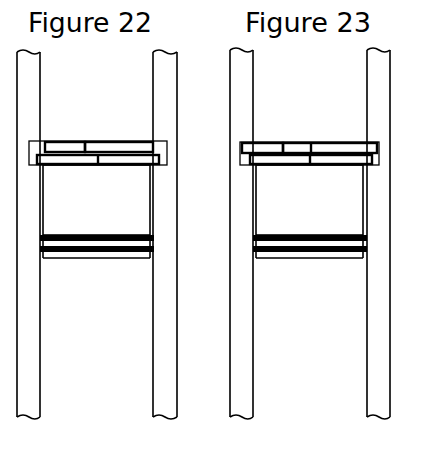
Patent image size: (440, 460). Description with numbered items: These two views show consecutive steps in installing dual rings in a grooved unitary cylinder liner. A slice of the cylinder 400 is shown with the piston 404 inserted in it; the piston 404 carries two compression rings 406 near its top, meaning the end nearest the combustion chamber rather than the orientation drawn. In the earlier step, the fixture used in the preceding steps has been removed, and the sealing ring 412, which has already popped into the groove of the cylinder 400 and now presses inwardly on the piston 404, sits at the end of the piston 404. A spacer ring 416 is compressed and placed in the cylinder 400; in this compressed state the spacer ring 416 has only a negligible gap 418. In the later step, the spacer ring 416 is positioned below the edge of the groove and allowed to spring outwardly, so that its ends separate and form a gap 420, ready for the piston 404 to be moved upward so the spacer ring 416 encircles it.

In FIG. 22, the cylinder 400 is at (160, 325).
In FIG. 23, the cylinder 400 is at (372, 325).
In FIG. 22, the piston 404 is at (118, 212).
In FIG. 23, the piston 404 is at (330, 209).
In FIG. 22, the compression rings 406 is at (133, 248).
In FIG. 23, the compression rings 406 is at (348, 249).
In FIG. 22, the sealing ring 412 is at (263, 160).
In FIG. 23, the sealing ring 412 is at (238, 175).
In FIG. 22, the spacer ring 416 is at (60, 147).
In FIG. 23, the spacer ring 416 is at (267, 147).
In FIG. 22, the gap 418 is at (86, 144).
In FIG. 23, the gap 420 is at (308, 145).